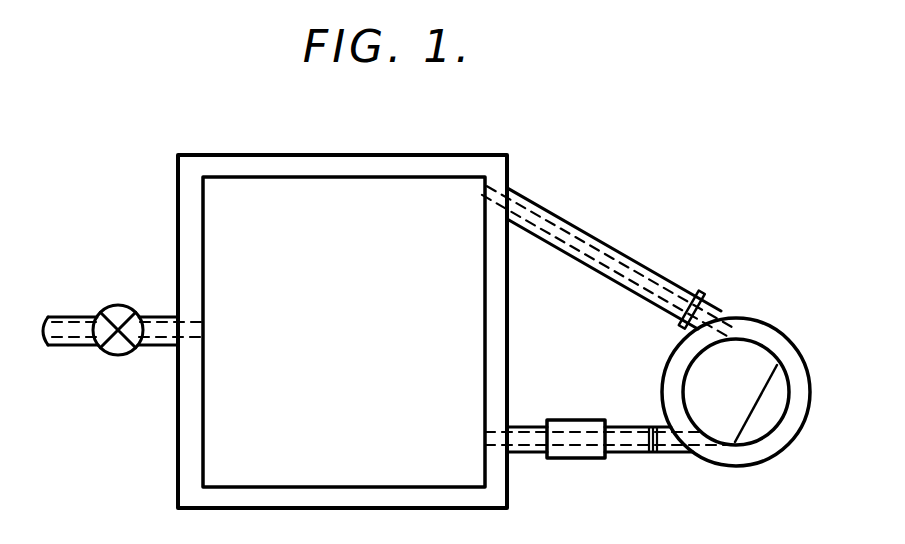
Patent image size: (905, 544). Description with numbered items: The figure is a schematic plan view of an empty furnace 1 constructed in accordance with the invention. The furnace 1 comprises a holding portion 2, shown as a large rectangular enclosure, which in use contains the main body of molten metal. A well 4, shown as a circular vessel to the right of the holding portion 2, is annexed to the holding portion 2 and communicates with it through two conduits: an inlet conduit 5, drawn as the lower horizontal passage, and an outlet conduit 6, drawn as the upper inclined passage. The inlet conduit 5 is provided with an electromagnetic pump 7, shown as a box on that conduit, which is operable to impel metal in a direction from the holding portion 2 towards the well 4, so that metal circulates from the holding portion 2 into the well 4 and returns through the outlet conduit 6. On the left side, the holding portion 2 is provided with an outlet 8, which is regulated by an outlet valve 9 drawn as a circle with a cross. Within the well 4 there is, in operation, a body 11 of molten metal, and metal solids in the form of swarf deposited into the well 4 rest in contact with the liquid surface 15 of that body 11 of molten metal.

The furnace 1 is at (117, 437).
The holding portion 2 is at (178, 388).
The well 4 is at (760, 360).
The inlet conduit 5 is at (627, 454).
The outlet conduit 6 is at (597, 240).
The electromagnetic pump 7 is at (569, 420).
The outlet 8 is at (57, 316).
The outlet valve 9 is at (118, 304).
The body of molten metal 11 is at (750, 362).
The liquid surface 15 is at (740, 400).